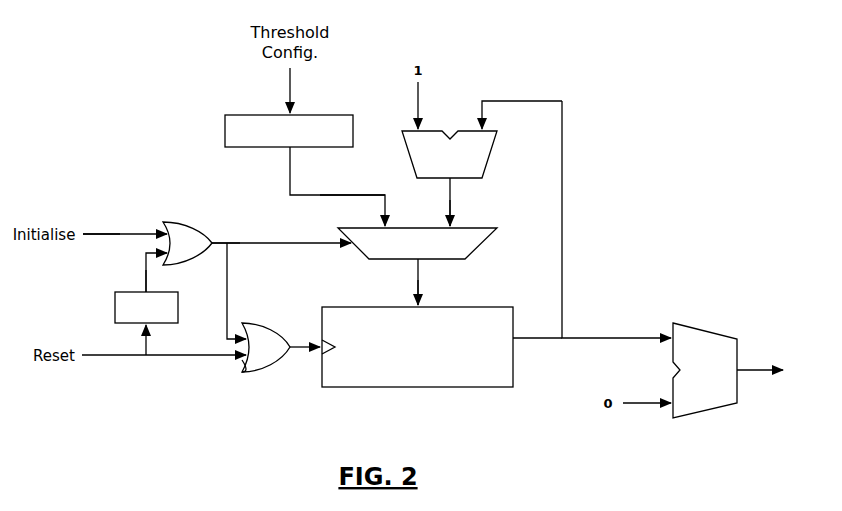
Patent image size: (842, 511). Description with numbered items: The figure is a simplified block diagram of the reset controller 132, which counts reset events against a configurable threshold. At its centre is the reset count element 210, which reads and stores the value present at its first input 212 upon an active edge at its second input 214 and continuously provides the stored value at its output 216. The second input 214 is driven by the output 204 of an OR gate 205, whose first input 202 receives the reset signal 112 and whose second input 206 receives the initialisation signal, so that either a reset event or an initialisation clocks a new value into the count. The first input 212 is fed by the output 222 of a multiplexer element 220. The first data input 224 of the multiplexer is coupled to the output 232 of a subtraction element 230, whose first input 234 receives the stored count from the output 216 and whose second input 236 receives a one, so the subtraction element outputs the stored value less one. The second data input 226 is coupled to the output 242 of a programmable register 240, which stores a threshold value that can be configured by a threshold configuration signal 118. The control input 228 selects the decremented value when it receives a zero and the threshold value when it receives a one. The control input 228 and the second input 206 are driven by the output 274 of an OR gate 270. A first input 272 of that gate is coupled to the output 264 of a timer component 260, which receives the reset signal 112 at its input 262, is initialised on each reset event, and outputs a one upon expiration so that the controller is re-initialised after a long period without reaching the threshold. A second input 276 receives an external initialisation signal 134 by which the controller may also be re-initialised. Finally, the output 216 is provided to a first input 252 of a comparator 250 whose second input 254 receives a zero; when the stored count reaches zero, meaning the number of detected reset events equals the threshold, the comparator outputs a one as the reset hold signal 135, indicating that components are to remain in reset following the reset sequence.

The reset controller 132 is at (128, 98).
The threshold configuration signal 118 is at (290, 102).
The programmable register 240 is at (225, 140).
The output of the programmable register 242 is at (290, 170).
The second data input of the multiplexer element 226 is at (370, 195).
The second input of the subtraction element 236 is at (418, 99).
The first input of the subtraction element 234 is at (497, 101).
The subtraction element 230 is at (485, 165).
The output of the subtraction element 232 is at (450, 186).
The first data input of the multiplexer element 224 is at (452, 213).
The multiplexer element 220 is at (485, 247).
The control input of the multiplexer element 228 is at (350, 240).
The output of the reset count element 216 is at (288, 243).
The output of the OR gate 274 is at (214, 243).
The OR gate 270 is at (184, 226).
The second input of the OR gate 276 is at (163, 228).
The external initialisation signal 134 is at (98, 234).
The first input of the OR gate 272 is at (146, 255).
The output of the timer 264 is at (146, 290).
The timer component 260 is at (115, 307).
The input of the timer 262 is at (146, 340).
The reset signal 112 is at (130, 355).
The first input of the OR gate 202 is at (228, 357).
The second input of the OR gate 206 is at (238, 324).
The output of the OR gate 204 is at (292, 329).
The OR gate 205 is at (252, 372).
The second input of the reset count element 214 is at (300, 357).
The output of the multiplexer element 222 is at (410, 262).
The first input of the reset count element 212 is at (420, 290).
The reset count element 210 is at (482, 387).
The first input of the comparator 252 is at (660, 336).
The comparator 250 is at (720, 334).
The second input of the comparator 254 is at (655, 403).
The reset hold signal 135 is at (752, 372).